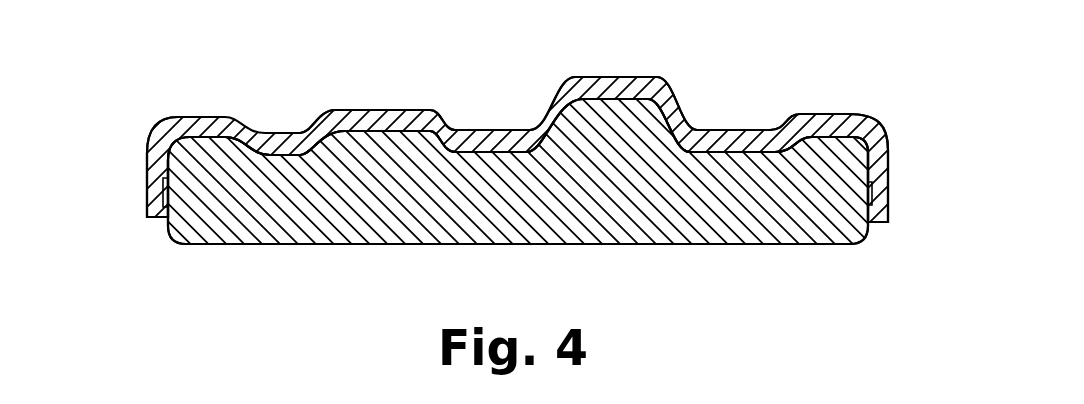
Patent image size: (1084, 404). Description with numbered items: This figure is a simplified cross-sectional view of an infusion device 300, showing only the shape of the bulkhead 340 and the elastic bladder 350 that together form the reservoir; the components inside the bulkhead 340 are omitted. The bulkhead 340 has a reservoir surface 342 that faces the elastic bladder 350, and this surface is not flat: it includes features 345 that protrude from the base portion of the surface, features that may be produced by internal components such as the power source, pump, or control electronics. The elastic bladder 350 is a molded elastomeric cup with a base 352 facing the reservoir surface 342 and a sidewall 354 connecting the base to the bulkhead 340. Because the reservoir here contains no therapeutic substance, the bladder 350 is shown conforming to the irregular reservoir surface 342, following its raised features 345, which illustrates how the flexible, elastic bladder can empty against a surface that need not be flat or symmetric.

The infusion device 300 is at (793, 82).
The bulkhead 340 is at (757, 244).
The reservoir surface 342 is at (496, 150).
The features 345 is at (383, 110).
The elastic bladder 350 is at (609, 76).
The base 352 is at (278, 134).
The sidewall 354 is at (147, 166).